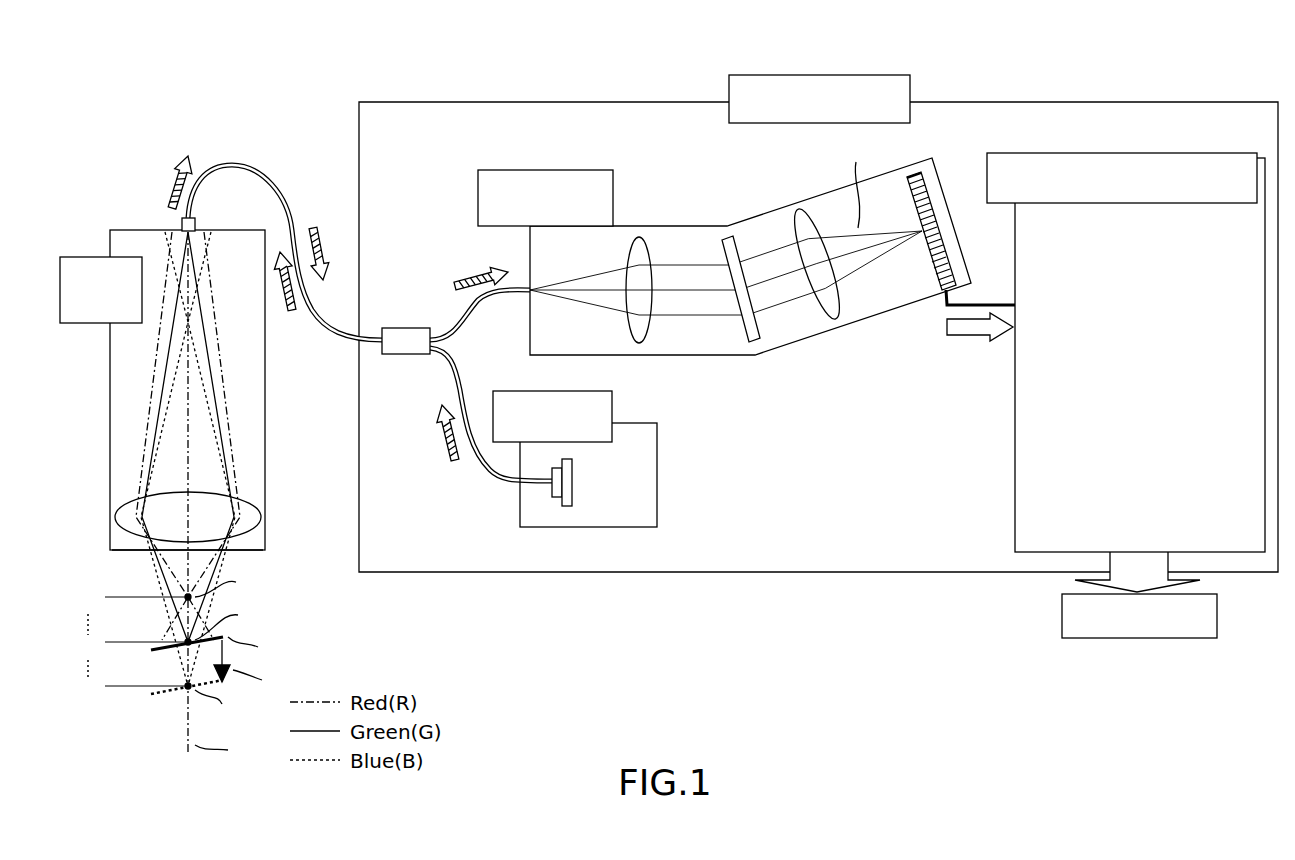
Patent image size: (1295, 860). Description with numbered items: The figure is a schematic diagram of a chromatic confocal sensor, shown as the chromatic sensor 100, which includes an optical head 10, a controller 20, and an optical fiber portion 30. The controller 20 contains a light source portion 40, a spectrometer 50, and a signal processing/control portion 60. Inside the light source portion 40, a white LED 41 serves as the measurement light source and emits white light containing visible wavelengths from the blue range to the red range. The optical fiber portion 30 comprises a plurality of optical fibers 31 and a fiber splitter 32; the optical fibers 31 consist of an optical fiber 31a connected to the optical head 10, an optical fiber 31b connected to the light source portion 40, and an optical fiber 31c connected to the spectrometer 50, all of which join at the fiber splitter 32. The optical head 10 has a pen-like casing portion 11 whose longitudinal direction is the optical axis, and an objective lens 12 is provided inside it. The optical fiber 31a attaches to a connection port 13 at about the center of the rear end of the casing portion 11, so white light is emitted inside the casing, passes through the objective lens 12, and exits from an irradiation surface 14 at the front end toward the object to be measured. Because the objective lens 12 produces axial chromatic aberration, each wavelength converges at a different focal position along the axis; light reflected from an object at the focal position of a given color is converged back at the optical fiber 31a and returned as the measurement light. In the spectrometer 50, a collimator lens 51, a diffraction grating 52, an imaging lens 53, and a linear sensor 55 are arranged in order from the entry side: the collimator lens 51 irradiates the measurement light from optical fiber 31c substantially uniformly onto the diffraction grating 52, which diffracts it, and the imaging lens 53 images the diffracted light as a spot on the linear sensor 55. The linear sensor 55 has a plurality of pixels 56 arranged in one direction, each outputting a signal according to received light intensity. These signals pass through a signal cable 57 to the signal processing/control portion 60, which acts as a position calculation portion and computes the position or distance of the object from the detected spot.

The chromatic sensor 100 is at (611, 74).
The optical head 10 is at (196, 460).
The casing portion 11 is at (268, 405).
The objective lens 12 is at (250, 503).
The connection port 13 is at (197, 222).
The irradiation surface 14 is at (258, 552).
The controller 20 is at (683, 92).
The optical fiber portion 30 is at (352, 297).
The optical fibers 31 is at (285, 213).
The optical fiber 31a is at (262, 168).
The optical fiber 31b is at (478, 466).
The optical fiber 31c is at (480, 304).
The fiber splitter 32 is at (405, 327).
The light source portion 40 is at (606, 474).
The white LED 41 is at (566, 506).
The spectrometer 50 is at (746, 265).
The collimator lens 51 is at (641, 234).
The diffraction grating 52 is at (725, 236).
The imaging lens 53 is at (838, 320).
The linear sensor 55 is at (936, 224).
The pixels 56 is at (920, 188).
The signal cable 57 is at (996, 305).
The signal processing/control portion 60 is at (1015, 437).